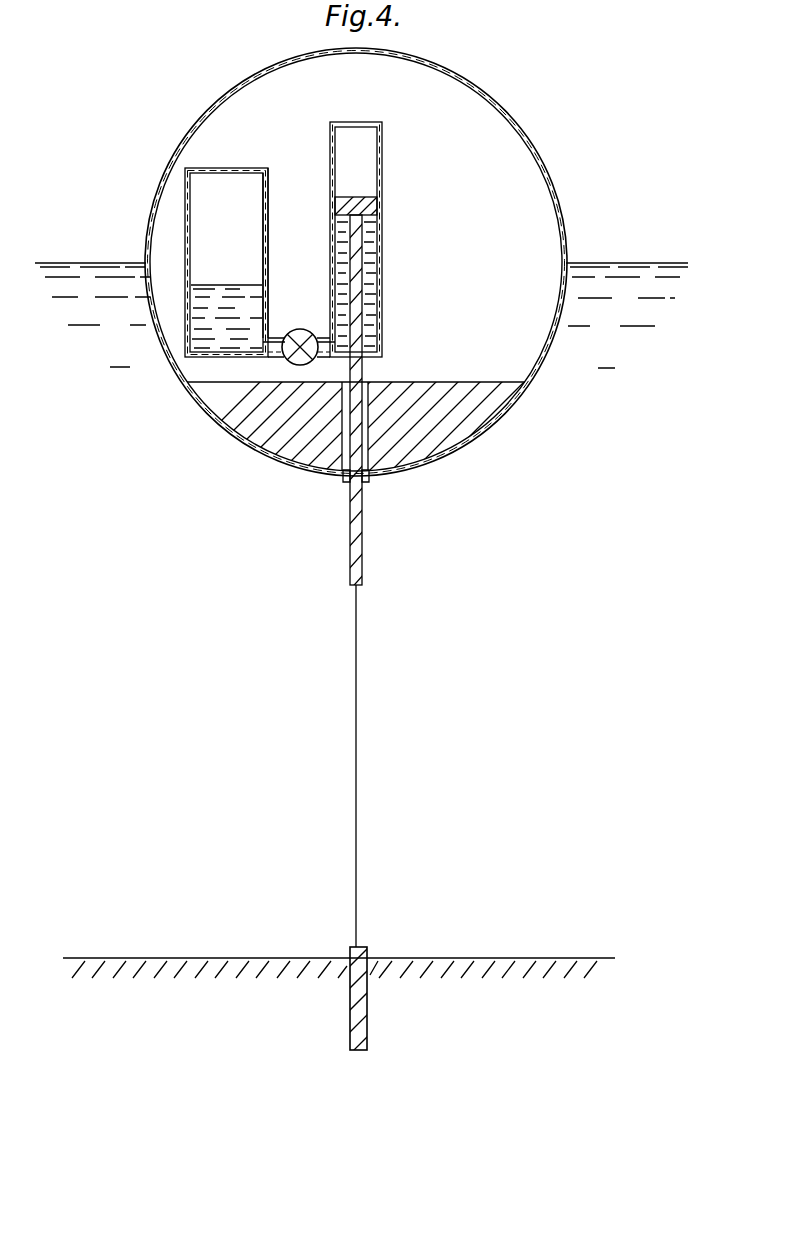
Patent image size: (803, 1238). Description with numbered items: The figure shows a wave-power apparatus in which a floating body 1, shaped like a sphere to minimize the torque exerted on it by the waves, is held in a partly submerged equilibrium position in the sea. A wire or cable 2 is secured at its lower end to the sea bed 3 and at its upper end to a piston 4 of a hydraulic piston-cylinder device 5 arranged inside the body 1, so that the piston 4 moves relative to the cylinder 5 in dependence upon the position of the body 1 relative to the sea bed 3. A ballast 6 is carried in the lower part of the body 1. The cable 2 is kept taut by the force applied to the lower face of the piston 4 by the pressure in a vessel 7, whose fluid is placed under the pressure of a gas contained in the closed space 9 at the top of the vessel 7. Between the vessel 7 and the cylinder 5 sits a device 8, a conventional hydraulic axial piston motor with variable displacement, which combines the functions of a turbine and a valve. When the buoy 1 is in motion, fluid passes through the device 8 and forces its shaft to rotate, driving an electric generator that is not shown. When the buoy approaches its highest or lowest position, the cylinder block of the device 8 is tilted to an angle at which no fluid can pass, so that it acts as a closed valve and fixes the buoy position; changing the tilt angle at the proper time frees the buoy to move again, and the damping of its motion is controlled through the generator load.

The floating body 1 is at (515, 119).
The cable 2 is at (360, 710).
The sea bed 3 is at (452, 958).
The piston 4 is at (372, 208).
The hydraulic piston-cylinder device 5 is at (382, 265).
The ballast 6 is at (441, 441).
The vessel 7 is at (268, 222).
The hydraulic axial piston motor 8 is at (300, 329).
The closed space 9 is at (226, 236).